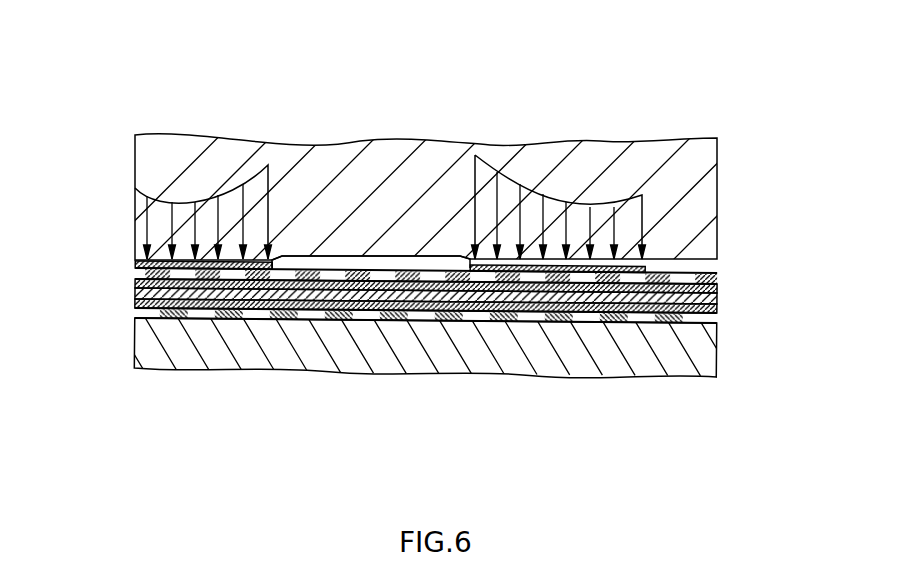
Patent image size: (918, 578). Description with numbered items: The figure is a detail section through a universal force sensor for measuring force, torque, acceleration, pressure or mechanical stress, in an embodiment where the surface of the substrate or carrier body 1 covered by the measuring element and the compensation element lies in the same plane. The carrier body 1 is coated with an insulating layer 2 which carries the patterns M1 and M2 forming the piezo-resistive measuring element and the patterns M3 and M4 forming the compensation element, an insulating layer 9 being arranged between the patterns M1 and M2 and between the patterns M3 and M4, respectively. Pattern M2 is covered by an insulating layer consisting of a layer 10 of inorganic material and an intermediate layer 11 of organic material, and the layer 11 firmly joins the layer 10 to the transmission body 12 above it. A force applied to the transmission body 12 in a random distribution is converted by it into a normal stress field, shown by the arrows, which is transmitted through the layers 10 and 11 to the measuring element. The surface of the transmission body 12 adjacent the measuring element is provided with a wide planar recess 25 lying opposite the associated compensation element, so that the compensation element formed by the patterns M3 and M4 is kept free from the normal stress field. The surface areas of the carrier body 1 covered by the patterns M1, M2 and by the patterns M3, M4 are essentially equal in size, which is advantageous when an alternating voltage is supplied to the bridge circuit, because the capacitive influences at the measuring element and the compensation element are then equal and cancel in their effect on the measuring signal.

The carrier body 1 is at (700, 346).
The insulating layer 2 is at (718, 320).
The insulating layer 9 is at (718, 302).
The layer of inorganic material 10 is at (718, 282).
The intermediate layer of organic material 11 is at (718, 266).
The transmission body 12 is at (697, 168).
The wide planar recess 25 is at (337, 262).
The pattern of the measuring element M1 is at (248, 298).
The pattern of the measuring element M2 is at (470, 362).
The pattern of the compensation element M3 is at (398, 300).
The pattern of the compensation element M4 is at (672, 335).